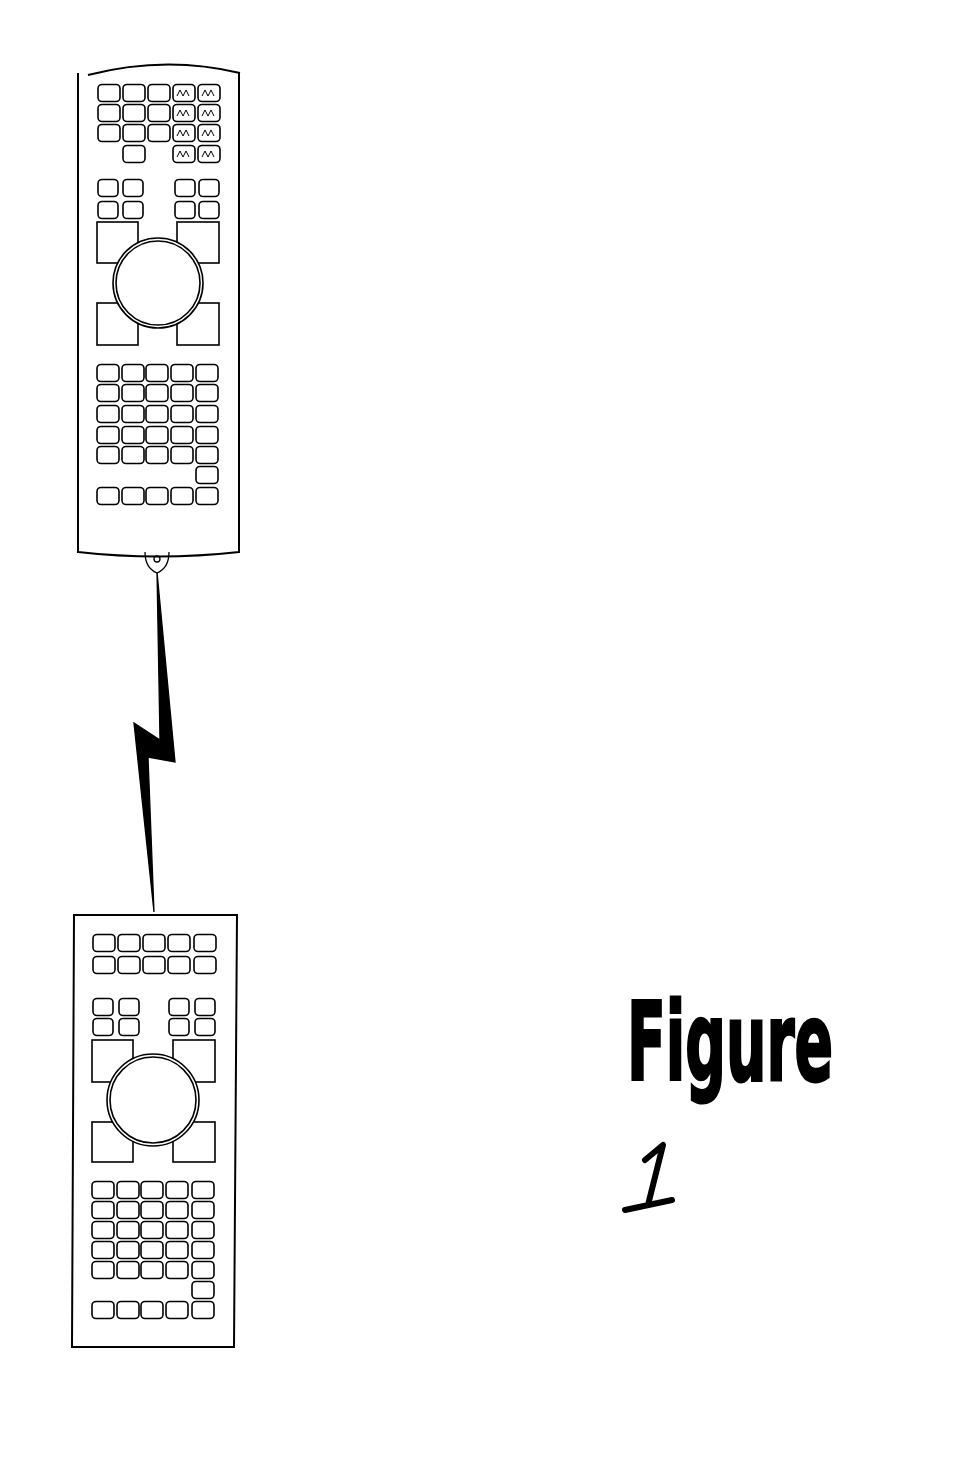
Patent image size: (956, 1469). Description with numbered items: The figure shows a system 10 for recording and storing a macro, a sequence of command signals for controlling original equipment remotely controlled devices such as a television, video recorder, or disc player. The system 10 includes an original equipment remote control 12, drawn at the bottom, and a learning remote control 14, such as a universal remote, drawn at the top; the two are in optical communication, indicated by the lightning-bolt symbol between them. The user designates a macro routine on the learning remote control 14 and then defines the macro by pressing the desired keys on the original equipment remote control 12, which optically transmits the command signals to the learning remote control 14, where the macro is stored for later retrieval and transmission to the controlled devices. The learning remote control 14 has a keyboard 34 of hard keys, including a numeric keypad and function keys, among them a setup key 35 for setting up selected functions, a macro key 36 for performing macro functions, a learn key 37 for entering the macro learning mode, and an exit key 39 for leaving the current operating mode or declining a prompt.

The system 10 is at (522, 284).
The original equipment remote control 12 is at (268, 956).
The learning remote control 14 is at (279, 108).
The keyboard 34 is at (227, 279).
The setup key 35 is at (214, 86).
The macro key 36 is at (220, 153).
The learn key 37 is at (186, 86).
The exit key 39 is at (219, 133).